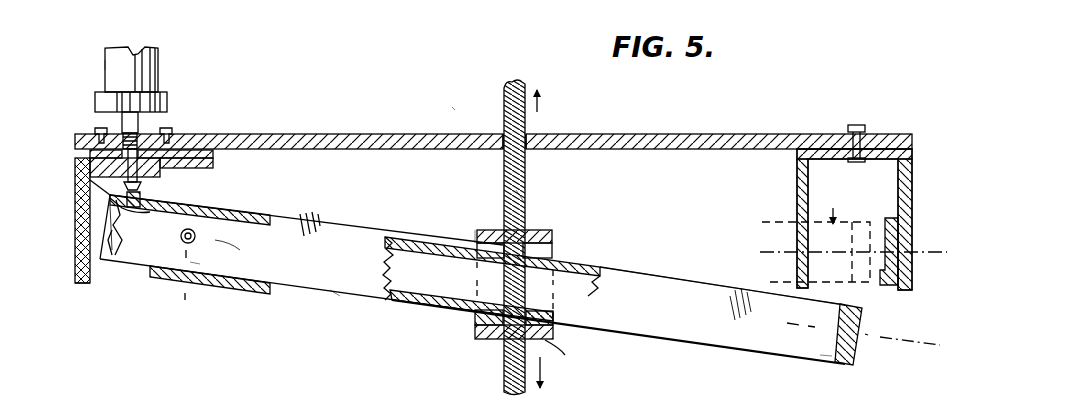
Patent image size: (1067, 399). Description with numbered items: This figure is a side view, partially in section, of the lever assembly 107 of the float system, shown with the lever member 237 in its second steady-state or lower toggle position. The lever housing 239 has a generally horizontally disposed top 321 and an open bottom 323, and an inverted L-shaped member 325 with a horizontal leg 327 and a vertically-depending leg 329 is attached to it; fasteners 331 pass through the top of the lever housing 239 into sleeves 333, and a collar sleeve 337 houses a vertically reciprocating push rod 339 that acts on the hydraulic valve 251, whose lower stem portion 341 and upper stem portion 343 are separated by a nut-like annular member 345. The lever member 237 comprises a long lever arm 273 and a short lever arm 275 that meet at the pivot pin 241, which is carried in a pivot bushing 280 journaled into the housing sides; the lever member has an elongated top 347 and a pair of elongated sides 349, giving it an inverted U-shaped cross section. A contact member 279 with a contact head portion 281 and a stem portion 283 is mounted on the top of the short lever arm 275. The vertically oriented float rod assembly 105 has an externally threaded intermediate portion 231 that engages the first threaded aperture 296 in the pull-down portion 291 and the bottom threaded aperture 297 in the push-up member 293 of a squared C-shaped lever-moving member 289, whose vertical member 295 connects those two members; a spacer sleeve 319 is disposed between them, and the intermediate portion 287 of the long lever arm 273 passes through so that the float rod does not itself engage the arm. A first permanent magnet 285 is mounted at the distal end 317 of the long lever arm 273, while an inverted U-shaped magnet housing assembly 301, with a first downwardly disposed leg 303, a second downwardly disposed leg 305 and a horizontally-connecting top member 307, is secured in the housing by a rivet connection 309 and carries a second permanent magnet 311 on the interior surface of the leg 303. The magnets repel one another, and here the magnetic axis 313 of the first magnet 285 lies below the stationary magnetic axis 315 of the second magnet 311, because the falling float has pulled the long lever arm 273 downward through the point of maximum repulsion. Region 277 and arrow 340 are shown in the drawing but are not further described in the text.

The float rod assembly 105 is at (520, 196).
The lever assembly 107 is at (452, 106).
The externally-threaded intermediate portion 231 is at (503, 110).
The lever member 237 is at (302, 216).
The lever housing 239 is at (312, 134).
The pivot pin 241 is at (240, 280).
The hydraulic valve 251 is at (100, 78).
The long lever arm 273 is at (318, 290).
The short lever arm 275 is at (116, 258).
The inner surface 277 is at (185, 278).
The contact member 279 is at (150, 258).
The pivot bushing 280 is at (195, 232).
The contact head portion 281 is at (113, 205).
The stem portion 283 is at (110, 232).
The first permanent magnet 285 is at (856, 345).
The intermediate portion 287 is at (432, 300).
The C-shaped lever-moving member 289 is at (555, 250).
The pull-down portion 291 is at (478, 230).
The push-up member 293 is at (548, 342).
The vertical member 295 is at (527, 135).
The first threaded aperture 296 is at (386, 264).
The bottom threaded aperture 297 is at (495, 340).
The magnet housing assembly 301 is at (912, 162).
The first downwardly disposed leg 303 is at (905, 205).
The second downwardly disposed leg 305 is at (797, 204).
The horizontally-connecting top member 307 is at (825, 150).
The rivet connection 309 is at (860, 124).
The second permanent magnet 311 is at (885, 255).
The magnetic axis 313 is at (915, 340).
The magnetic axis 315 is at (917, 254).
The distal end 317 is at (835, 356).
The spacer sleeve 319 is at (525, 292).
The top 321 is at (668, 134).
The open bottom 323 is at (738, 278).
The inverted L-shaped member 325 is at (73, 175).
The horizontal leg 327 is at (170, 170).
The vertically-depending leg 329 is at (76, 286).
The fasteners 331 is at (98, 132).
The sleeves 333 is at (92, 150).
The collar sleeve 337 is at (78, 188).
The push rod 339 is at (127, 196).
The phantom block 340 is at (816, 229).
The lower stem portion 341 is at (140, 127).
The upper stem portion 343 is at (155, 66).
The nut-like annular member 345 is at (167, 102).
The top 347 is at (590, 262).
The sides 349 is at (225, 240).